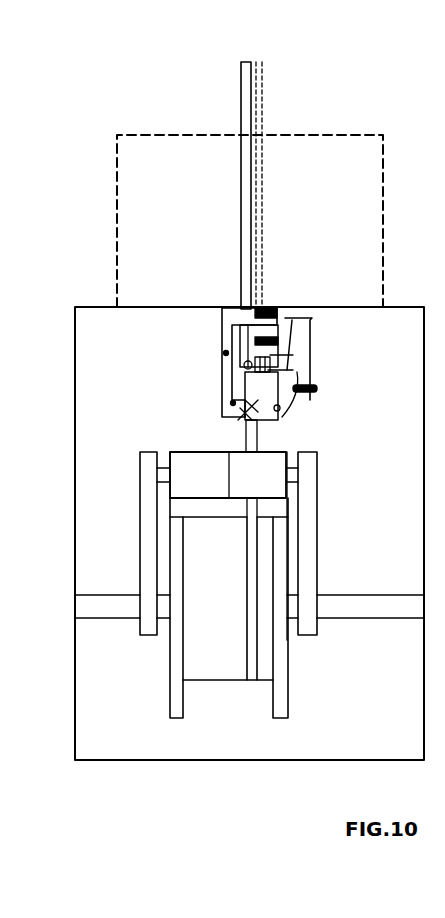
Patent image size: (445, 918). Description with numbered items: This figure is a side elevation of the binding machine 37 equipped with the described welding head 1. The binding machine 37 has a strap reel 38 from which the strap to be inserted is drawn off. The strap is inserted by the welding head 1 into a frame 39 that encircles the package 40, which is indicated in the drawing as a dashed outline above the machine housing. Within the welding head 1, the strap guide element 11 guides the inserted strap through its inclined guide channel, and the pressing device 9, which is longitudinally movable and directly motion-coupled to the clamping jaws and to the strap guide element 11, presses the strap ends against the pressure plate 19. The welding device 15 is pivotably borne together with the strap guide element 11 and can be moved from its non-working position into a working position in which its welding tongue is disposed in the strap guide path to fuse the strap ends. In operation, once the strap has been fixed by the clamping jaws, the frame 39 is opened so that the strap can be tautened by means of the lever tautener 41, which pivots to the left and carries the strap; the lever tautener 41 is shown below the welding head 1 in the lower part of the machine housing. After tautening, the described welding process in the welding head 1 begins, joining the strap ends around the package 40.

The welding head 1 is at (322, 399).
The pressing device 9 is at (248, 407).
The strap guide element 11 is at (222, 335).
The welding device 15 is at (309, 340).
The pressure plate 19 is at (222, 308).
The binding machine 37 is at (141, 104).
The strap reel 38 is at (228, 672).
The frame 39 is at (241, 85).
The package 40 is at (368, 205).
The lever tautener 41 is at (190, 468).